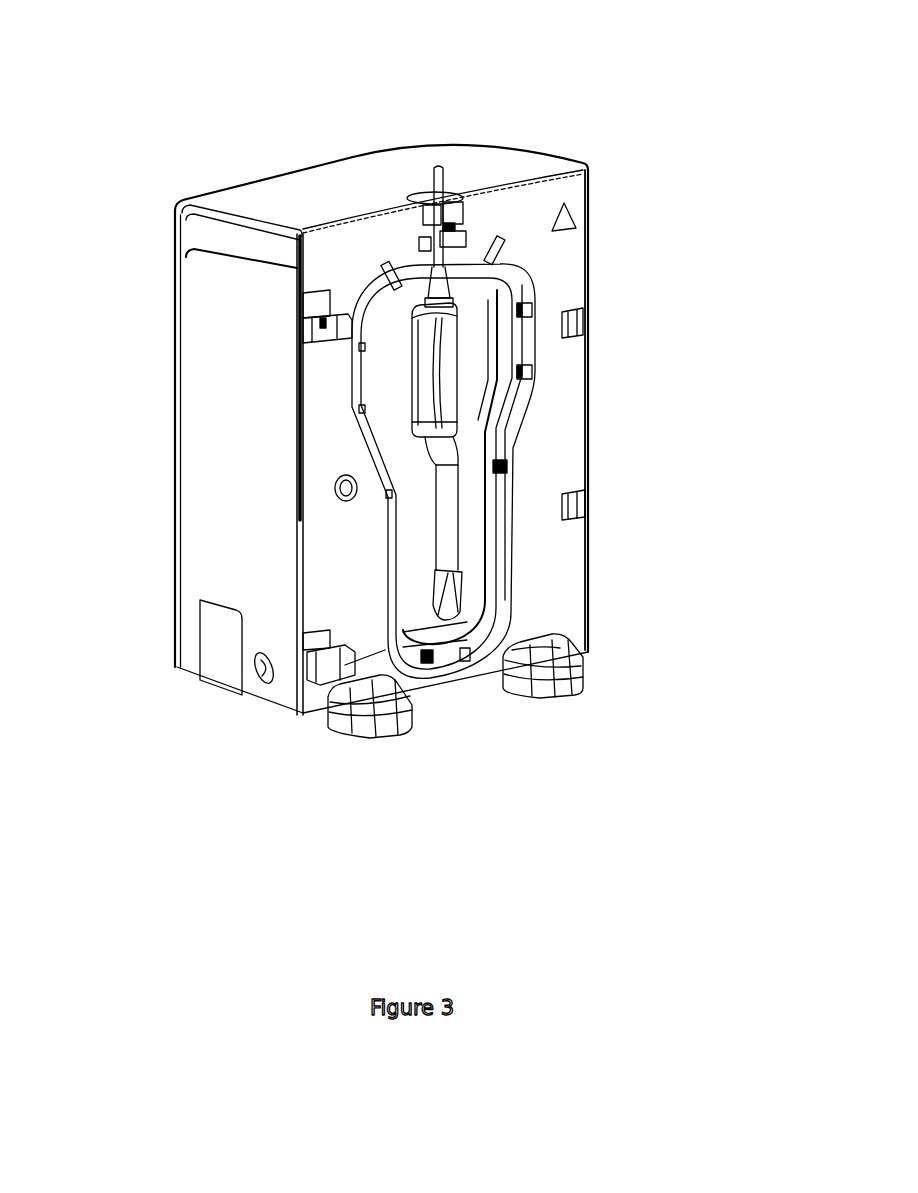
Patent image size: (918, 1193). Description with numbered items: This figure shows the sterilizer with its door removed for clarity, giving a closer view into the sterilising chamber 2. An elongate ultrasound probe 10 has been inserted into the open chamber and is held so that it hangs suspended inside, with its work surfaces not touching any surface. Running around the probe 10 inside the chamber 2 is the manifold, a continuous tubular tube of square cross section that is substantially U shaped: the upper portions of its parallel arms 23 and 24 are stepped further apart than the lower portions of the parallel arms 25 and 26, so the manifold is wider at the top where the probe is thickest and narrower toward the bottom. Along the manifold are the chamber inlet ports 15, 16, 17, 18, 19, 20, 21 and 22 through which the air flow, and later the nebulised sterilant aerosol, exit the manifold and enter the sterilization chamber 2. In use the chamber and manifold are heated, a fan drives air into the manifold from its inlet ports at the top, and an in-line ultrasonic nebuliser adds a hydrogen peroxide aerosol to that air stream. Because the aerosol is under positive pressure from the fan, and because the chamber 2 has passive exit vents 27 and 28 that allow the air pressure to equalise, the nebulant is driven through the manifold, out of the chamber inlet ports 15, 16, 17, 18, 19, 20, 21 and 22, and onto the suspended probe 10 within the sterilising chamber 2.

The sterilising chamber 2 is at (390, 323).
The ultrasound probe 10 is at (447, 543).
The chamber inlet port 15 is at (352, 373).
The chamber inlet port 16 is at (535, 310).
The chamber inlet port 17 is at (357, 410).
The chamber inlet port 18 is at (520, 377).
The chamber inlet port 19 is at (387, 494).
The chamber inlet port 20 is at (510, 461).
The chamber inlet port 21 is at (307, 682).
The chamber inlet port 22 is at (467, 650).
The parallel arm 23 is at (353, 346).
The parallel arm 24 is at (530, 343).
The parallel arm 25 is at (392, 593).
The parallel arm 26 is at (497, 573).
The passive exit vent 27 is at (390, 325).
The passive exit vent 28 is at (497, 242).